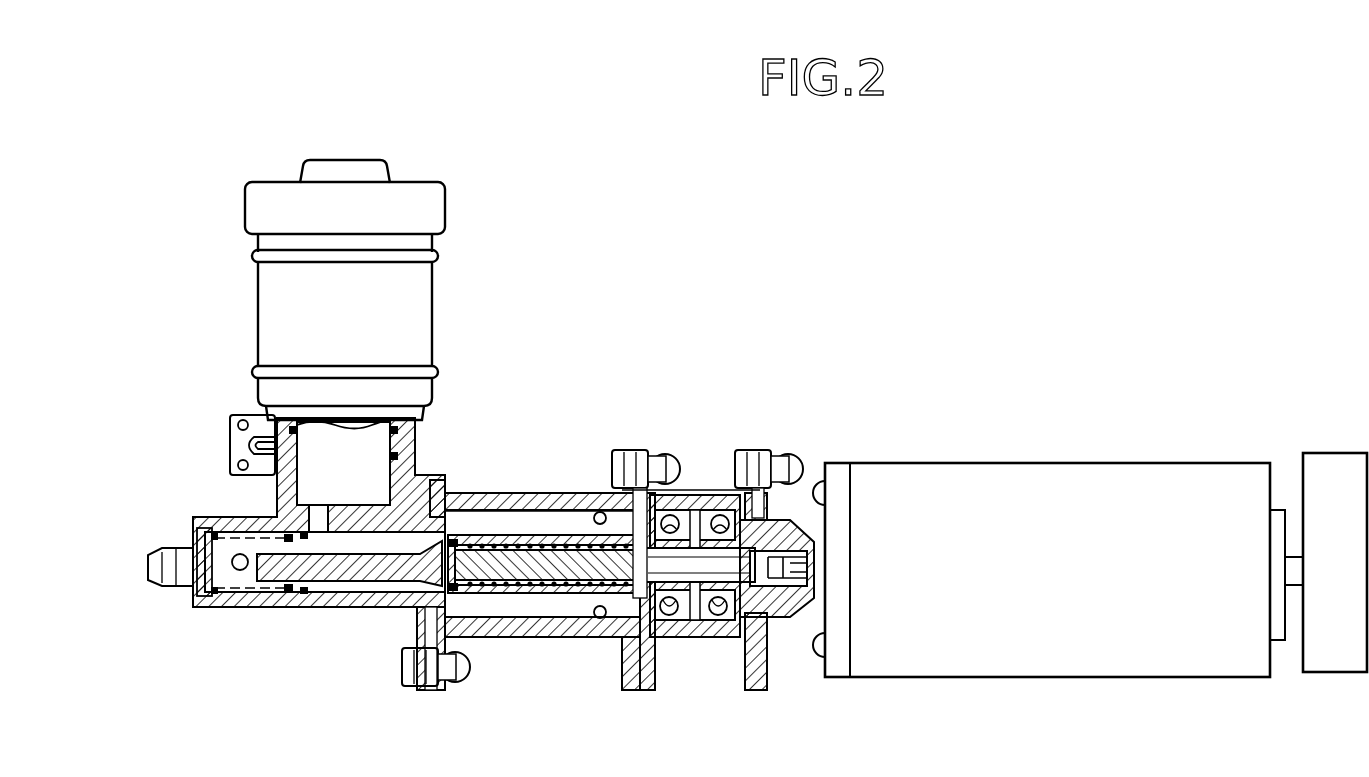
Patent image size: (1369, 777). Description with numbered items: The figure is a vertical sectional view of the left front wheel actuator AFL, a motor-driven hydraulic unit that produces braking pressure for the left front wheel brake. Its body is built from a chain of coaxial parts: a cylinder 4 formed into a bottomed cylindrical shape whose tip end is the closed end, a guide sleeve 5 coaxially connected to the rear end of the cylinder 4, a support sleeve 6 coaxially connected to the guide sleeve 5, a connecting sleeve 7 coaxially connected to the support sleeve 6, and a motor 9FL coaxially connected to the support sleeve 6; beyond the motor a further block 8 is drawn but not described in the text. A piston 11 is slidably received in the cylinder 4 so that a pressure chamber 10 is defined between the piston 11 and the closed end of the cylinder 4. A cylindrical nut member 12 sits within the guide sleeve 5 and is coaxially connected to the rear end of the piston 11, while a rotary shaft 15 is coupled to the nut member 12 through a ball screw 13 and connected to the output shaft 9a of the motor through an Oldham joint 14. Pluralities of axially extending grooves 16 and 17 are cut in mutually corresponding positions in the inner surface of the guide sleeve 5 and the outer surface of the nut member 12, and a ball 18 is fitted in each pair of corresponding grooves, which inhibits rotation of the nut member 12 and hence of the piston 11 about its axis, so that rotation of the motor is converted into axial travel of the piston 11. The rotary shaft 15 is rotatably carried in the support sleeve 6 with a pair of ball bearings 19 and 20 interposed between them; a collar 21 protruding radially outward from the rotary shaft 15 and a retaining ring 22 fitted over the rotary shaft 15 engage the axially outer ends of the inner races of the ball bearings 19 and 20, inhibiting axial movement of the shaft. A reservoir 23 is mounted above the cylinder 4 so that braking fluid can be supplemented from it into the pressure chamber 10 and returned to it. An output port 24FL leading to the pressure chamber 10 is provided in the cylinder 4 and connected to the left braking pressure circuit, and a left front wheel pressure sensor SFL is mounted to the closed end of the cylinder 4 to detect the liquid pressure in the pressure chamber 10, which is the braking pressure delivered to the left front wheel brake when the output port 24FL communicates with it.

The cylinder 4 is at (371, 602).
The guide sleeve 5 is at (528, 497).
The support sleeve 6 is at (691, 498).
The connecting sleeve 7 is at (791, 521).
The controller 8 is at (1326, 460).
The motor 9FL is at (1068, 583).
The output shaft 9a is at (792, 556).
The pressure chamber 10 is at (244, 580).
The piston 11 is at (405, 547).
The nut member 12 is at (578, 532).
The ball screw 13 is at (566, 592).
The Oldham joint 14 is at (796, 606).
The rotary shaft 15 is at (493, 572).
The axially extending grooves 16 is at (493, 520).
The axially extending grooves 17 is at (556, 598).
The ball 18 is at (600, 619).
The ball bearing 19 is at (670, 616).
The ball bearing 20 is at (717, 616).
The collar 21 is at (644, 466).
The retaining ring 22 is at (771, 624).
The reservoir 23 is at (430, 300).
The output port 24FL is at (239, 556).
The left front wheel actuator AFL is at (762, 432).
The left front wheel pressure sensor SFL is at (183, 568).